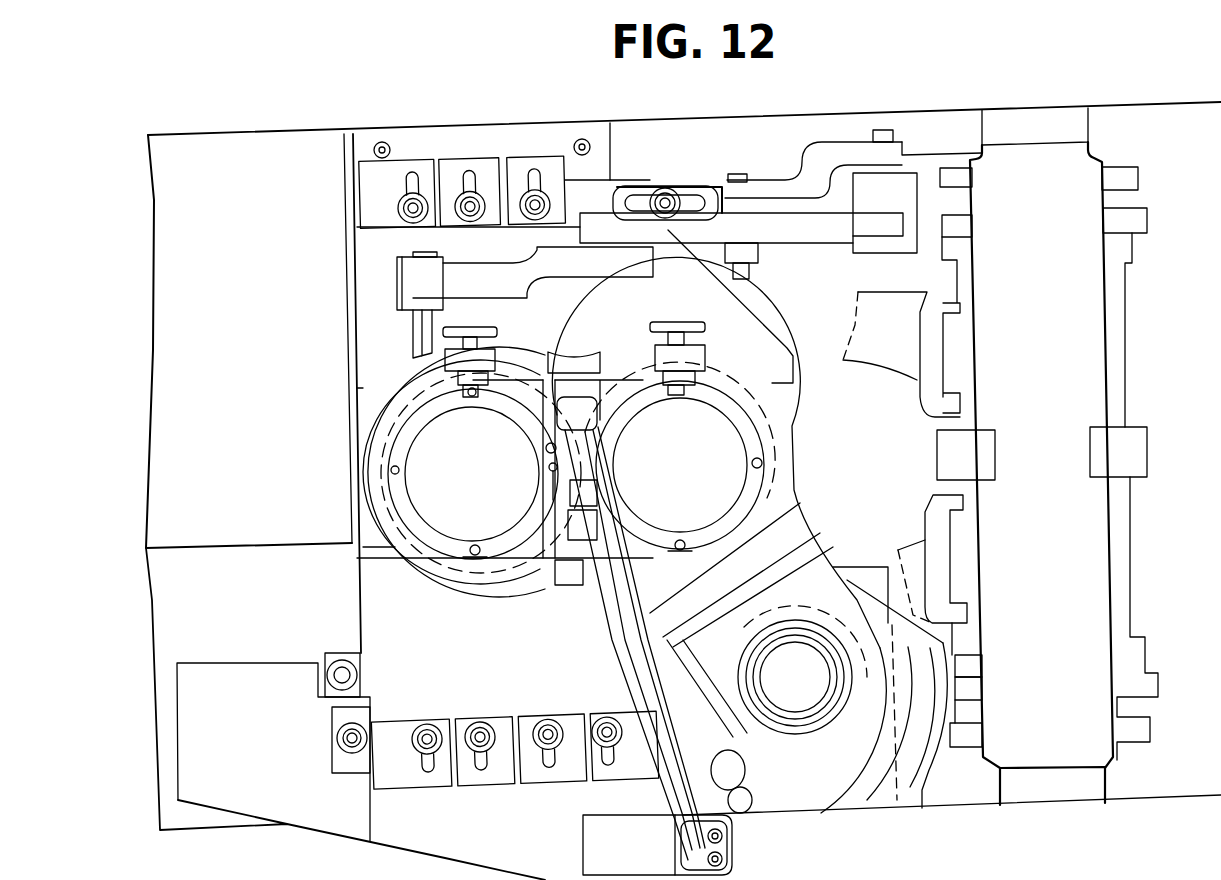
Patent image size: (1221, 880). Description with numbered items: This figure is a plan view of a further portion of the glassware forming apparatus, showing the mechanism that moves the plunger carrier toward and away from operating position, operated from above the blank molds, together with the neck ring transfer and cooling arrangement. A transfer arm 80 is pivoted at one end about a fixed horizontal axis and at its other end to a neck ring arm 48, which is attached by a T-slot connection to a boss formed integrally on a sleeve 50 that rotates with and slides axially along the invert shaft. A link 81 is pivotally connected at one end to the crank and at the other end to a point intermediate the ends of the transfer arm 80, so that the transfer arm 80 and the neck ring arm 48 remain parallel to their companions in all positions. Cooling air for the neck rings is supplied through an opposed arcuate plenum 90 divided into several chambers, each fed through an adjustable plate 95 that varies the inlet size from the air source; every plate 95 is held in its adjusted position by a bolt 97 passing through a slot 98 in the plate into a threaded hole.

The neck ring arm 48 is at (884, 352).
The sleeve 50 is at (1038, 607).
The transfer arm 80 is at (822, 224).
The link 81 is at (810, 155).
The arcuate plenum 90 is at (768, 337).
The adjustable plate 95 is at (473, 160).
The bolt 97 is at (473, 222).
The slot 98 is at (413, 182).